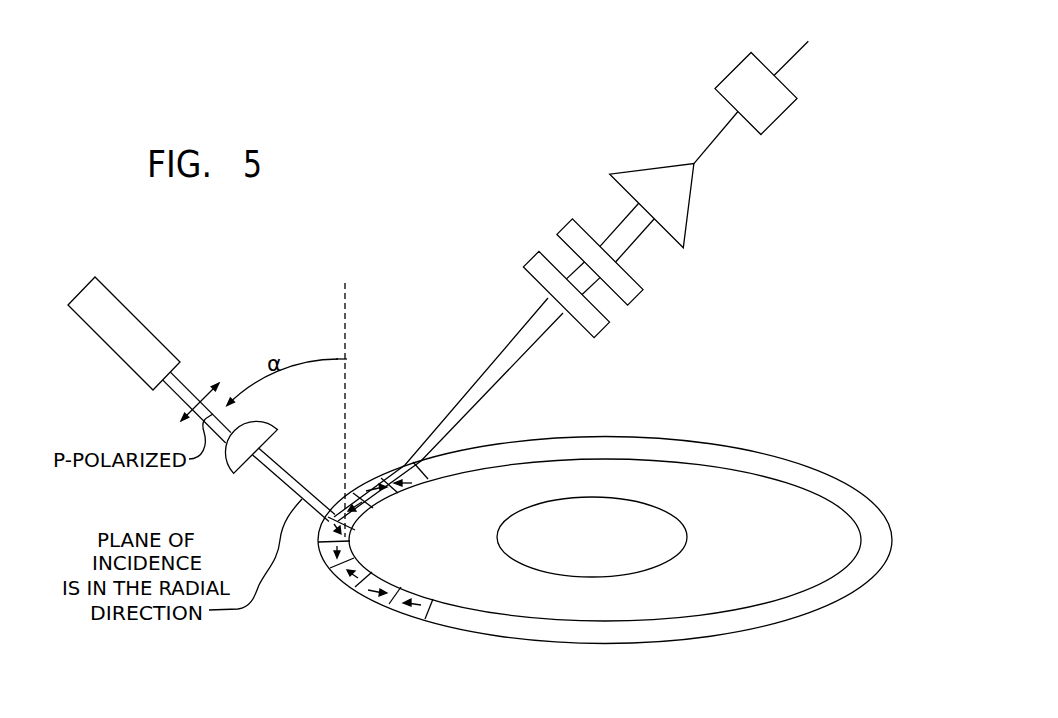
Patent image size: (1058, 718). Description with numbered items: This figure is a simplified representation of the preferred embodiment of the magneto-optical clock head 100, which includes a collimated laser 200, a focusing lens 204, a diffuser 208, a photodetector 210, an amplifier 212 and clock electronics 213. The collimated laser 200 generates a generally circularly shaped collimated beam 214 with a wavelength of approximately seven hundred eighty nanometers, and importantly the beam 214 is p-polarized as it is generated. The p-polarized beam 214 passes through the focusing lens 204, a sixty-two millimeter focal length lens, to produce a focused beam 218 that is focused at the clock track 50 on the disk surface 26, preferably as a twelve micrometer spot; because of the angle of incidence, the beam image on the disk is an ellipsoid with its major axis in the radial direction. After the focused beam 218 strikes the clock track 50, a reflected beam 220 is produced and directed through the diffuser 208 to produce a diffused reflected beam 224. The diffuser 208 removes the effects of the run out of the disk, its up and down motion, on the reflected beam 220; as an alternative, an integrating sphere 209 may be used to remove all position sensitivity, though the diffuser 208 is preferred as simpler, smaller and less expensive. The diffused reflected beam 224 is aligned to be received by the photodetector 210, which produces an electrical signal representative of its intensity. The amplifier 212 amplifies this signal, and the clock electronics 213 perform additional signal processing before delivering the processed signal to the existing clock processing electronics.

The magneto-optical clock head 100 is at (262, 263).
The collimated laser 200 is at (132, 322).
The collimated beam 214 is at (194, 392).
The focusing lens 204 is at (230, 457).
The focused beam 218 is at (281, 476).
The disk surface 26 is at (762, 554).
The clock track 50 is at (403, 587).
The reflected beam 220 is at (449, 421).
The diffuser 208 is at (644, 310).
The integrating sphere 209 is at (606, 332).
The diffused reflected beam 224 is at (585, 283).
The photodetector 210 is at (632, 288).
The amplifier 212 is at (683, 208).
The clock electronics 213 is at (768, 115).